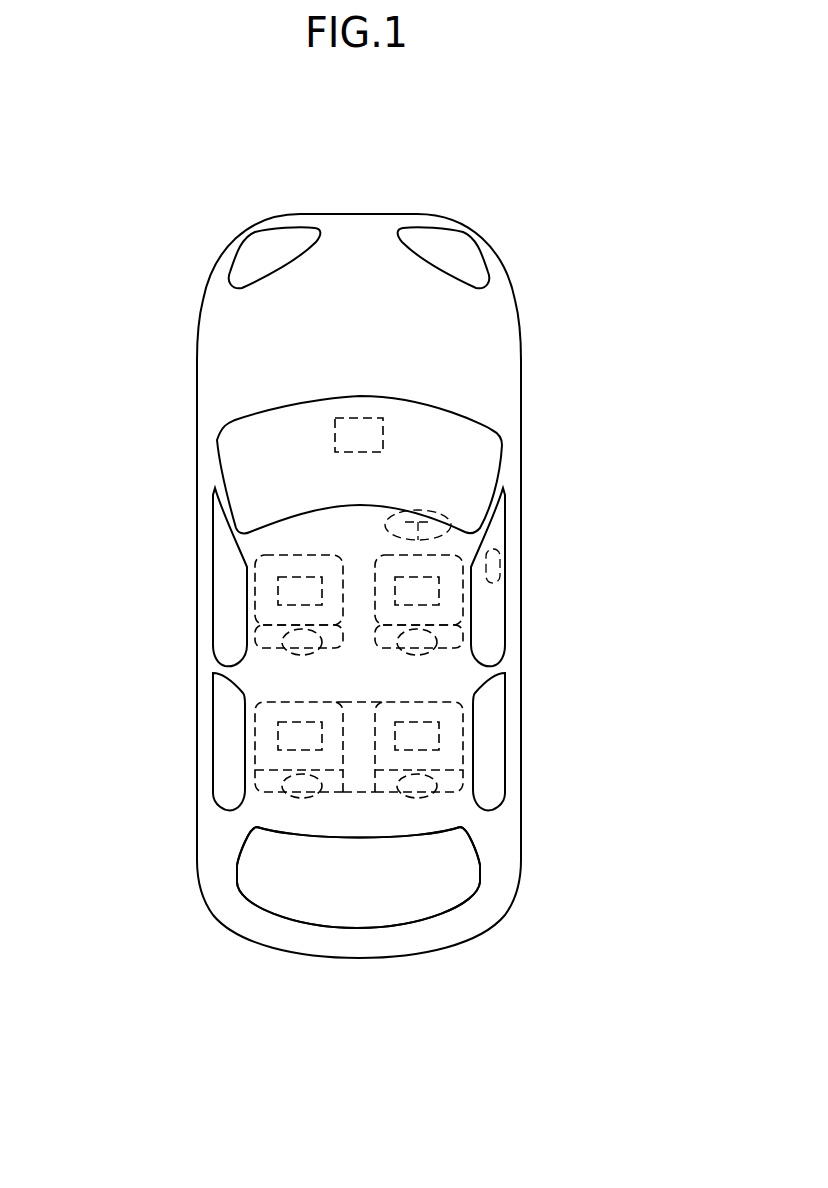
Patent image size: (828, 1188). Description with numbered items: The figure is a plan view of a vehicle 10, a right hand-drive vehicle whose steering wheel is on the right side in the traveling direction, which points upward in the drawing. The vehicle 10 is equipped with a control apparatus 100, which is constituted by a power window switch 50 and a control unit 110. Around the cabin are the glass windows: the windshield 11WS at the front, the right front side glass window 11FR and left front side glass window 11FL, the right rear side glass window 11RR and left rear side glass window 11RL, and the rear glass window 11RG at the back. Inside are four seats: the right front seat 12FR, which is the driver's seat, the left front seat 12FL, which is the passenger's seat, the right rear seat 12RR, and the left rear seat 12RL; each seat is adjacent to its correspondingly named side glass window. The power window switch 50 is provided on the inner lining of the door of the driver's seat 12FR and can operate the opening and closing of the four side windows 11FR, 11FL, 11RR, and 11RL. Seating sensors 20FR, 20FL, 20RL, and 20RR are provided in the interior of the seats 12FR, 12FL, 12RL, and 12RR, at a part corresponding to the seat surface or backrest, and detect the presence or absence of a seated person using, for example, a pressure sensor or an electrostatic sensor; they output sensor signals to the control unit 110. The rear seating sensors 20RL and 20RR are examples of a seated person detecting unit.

The vehicle 10 is at (532, 200).
The control apparatus 100 is at (377, 488).
The control unit 110 is at (335, 433).
The power window switch 50 is at (500, 565).
The glass window (windshield) 11WS is at (470, 463).
The glass window 11FL is at (232, 608).
The glass window 11FR is at (483, 607).
The glass window 11RL is at (233, 785).
The glass window 11RR is at (485, 785).
The glass window 11RG is at (415, 900).
The seat 12FL is at (283, 637).
The seat 12FR is at (435, 636).
The seat 12RL is at (262, 710).
The seat 12RR is at (456, 710).
The seating sensor 20FL is at (278, 590).
The seating sensor 20FR is at (439, 592).
The seating sensor 20RL is at (278, 737).
The seating sensor 20RR is at (439, 737).